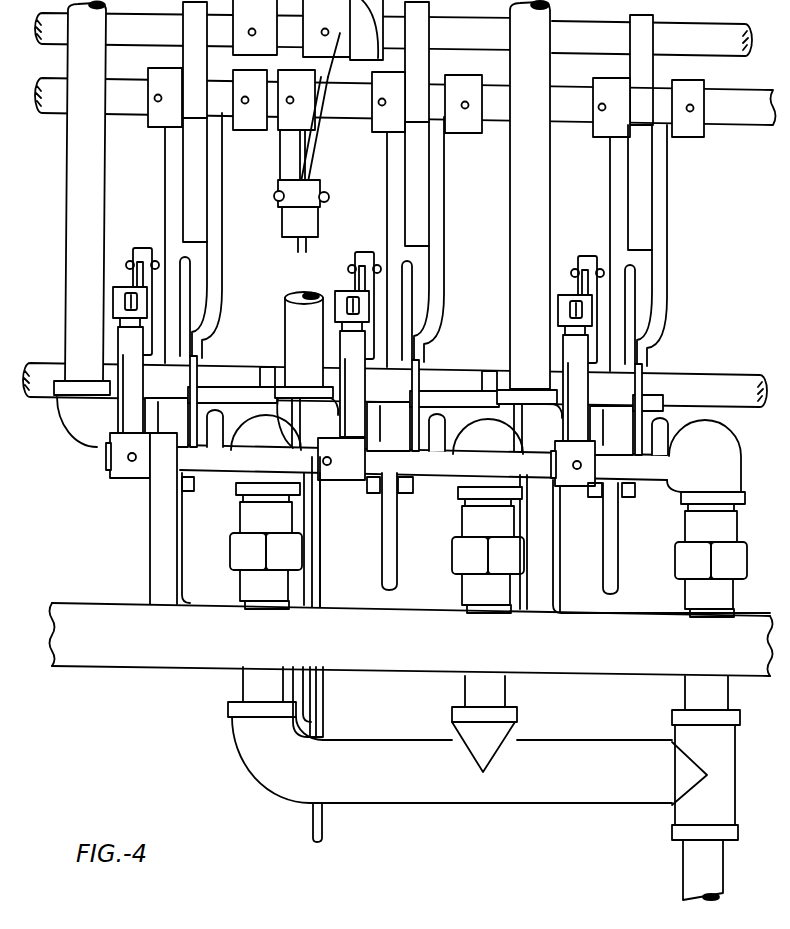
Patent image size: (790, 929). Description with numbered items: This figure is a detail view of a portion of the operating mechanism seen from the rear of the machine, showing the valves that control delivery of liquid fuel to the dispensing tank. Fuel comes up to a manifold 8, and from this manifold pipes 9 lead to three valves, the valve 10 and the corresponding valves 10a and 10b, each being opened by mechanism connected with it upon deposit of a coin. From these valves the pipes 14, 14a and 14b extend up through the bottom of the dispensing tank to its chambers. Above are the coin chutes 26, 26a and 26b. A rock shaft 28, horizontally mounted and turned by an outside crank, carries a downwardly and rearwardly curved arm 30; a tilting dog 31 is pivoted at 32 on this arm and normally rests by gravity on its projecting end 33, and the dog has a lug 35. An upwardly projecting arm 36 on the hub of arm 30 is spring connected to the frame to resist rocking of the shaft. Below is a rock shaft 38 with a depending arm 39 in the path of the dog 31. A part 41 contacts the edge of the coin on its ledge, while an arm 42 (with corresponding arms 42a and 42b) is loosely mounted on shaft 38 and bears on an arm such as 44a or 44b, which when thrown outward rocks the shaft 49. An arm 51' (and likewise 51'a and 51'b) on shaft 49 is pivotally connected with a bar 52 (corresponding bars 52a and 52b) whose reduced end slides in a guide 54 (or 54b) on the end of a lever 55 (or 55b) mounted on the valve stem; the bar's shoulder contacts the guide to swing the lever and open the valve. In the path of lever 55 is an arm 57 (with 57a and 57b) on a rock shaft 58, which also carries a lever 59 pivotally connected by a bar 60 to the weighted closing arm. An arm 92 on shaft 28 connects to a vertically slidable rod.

The manifold 8 is at (486, 805).
The pipes 9 is at (243, 686).
The valve casing 10 is at (166, 422).
The valve 10a is at (388, 426).
The valve 10b is at (611, 430).
The pipe 14 is at (82, 225).
The pipe 14a is at (306, 370).
The pipe 14b is at (529, 209).
The chute 26 is at (195, 60).
The chute 26a is at (440, 62).
The chute 26b is at (648, 44).
The rock shaft 28 is at (274, 31).
The curved arm 30 is at (328, 75).
The tilting dog 31 is at (272, 188).
The pivot 32 is at (276, 197).
The projecting end 33 is at (297, 222).
The lug 35 is at (313, 250).
The upwardly projecting arm 36 is at (376, 35).
The rock shaft 38 is at (405, 101).
The depending arm 39 is at (281, 155).
The contact part 41 is at (163, 230).
The arm 42 is at (218, 228).
The arm 42a is at (449, 218).
The arm 42b is at (674, 223).
The arm 44a is at (401, 531).
The arm 44b is at (624, 538).
The shaft 49 is at (750, 374).
The arm 51' is at (138, 252).
The arm 51'a is at (364, 252).
The arm 51'b is at (580, 253).
The bar 52 is at (136, 252).
The bar 52a is at (343, 305).
The bar 52b is at (576, 297).
The guide 54 is at (125, 301).
The guide 54b is at (547, 313).
The lever 55 is at (114, 292).
The lever 55b is at (552, 310).
The arm 57 is at (120, 338).
The arm 57a is at (326, 392).
The arm 57b is at (550, 396).
The rock shaft 58 is at (423, 462).
The lever 59 is at (318, 558).
The bar 60 is at (324, 726).
The arm 92 is at (255, 27).